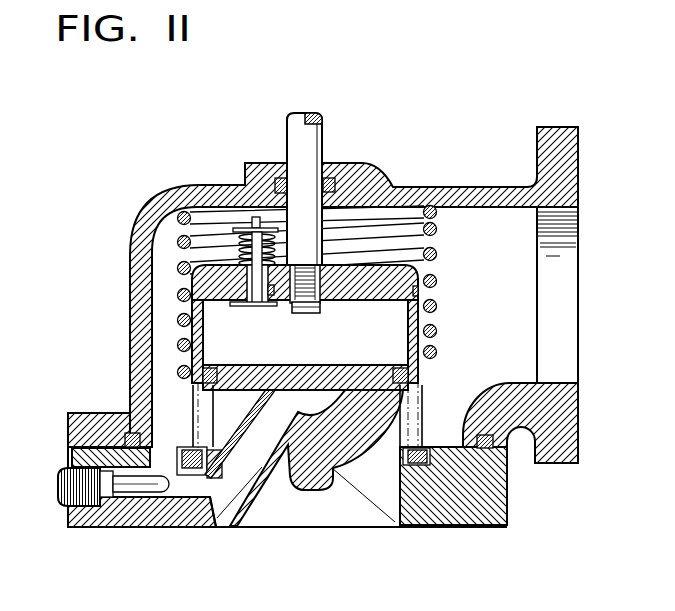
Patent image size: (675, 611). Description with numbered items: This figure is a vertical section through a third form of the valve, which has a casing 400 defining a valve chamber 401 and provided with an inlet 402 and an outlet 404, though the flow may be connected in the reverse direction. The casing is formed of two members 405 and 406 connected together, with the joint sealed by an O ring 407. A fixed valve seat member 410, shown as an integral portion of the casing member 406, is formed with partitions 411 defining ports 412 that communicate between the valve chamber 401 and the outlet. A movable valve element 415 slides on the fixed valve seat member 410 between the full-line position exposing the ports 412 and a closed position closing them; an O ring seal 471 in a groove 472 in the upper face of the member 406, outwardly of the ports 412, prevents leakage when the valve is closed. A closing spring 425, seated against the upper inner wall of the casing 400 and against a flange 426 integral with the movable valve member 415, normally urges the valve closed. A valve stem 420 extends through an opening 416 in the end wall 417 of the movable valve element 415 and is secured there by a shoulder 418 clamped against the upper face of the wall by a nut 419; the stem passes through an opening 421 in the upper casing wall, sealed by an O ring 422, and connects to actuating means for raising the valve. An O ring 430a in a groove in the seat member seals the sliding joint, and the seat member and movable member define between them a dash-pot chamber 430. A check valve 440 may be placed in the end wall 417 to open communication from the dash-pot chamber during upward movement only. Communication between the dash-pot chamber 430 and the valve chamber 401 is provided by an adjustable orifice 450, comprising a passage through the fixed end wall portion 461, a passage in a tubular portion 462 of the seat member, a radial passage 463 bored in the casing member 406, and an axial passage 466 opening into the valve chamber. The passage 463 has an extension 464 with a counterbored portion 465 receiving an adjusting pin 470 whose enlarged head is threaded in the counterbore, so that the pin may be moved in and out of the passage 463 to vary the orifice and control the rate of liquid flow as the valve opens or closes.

The casing 400 is at (424, 165).
The valve chamber 401 is at (463, 213).
The inlet 402 is at (560, 385).
The outlet 404 is at (390, 508).
The casing member 405 is at (135, 275).
The casing member 406 is at (503, 487).
The O ring 407 is at (130, 442).
The fixed valve seat member 410 is at (322, 400).
The partitions 411 is at (409, 402).
The ports 412 is at (391, 418).
The movable valve element 415 is at (424, 292).
The opening 416 is at (296, 280).
The end wall 417 is at (403, 275).
The shoulder 418 is at (322, 272).
The nut 419 is at (305, 332).
The valve stem 420 is at (323, 133).
The opening 421 is at (290, 157).
The O ring 422 is at (278, 183).
The closing spring 425 is at (177, 243).
The flange 426 is at (178, 358).
The chamber 430 is at (176, 332).
The O ring 430a is at (415, 380).
The check valve 440 is at (245, 305).
The adjustable orifice 450 is at (252, 458).
The fixed end wall portion 461 is at (352, 420).
The tubular portion 462 is at (237, 505).
The passage 463 is at (195, 499).
The extension 464 is at (123, 494).
The counterbored portion 465 is at (75, 460).
The passage 466 is at (192, 444).
The adjusting pin 470 is at (116, 487).
The O ring seal 471 is at (72, 497).
The groove 472 is at (264, 291).